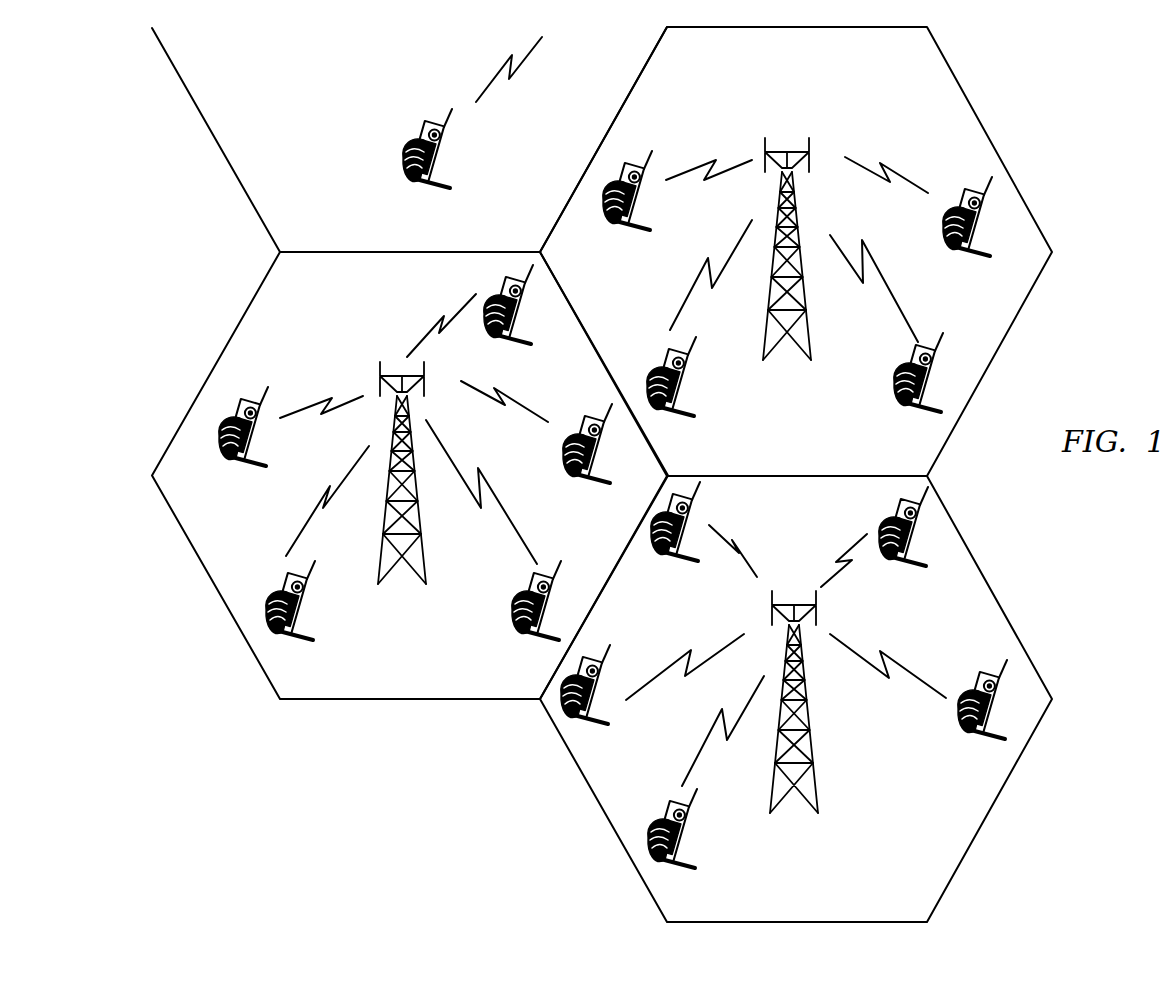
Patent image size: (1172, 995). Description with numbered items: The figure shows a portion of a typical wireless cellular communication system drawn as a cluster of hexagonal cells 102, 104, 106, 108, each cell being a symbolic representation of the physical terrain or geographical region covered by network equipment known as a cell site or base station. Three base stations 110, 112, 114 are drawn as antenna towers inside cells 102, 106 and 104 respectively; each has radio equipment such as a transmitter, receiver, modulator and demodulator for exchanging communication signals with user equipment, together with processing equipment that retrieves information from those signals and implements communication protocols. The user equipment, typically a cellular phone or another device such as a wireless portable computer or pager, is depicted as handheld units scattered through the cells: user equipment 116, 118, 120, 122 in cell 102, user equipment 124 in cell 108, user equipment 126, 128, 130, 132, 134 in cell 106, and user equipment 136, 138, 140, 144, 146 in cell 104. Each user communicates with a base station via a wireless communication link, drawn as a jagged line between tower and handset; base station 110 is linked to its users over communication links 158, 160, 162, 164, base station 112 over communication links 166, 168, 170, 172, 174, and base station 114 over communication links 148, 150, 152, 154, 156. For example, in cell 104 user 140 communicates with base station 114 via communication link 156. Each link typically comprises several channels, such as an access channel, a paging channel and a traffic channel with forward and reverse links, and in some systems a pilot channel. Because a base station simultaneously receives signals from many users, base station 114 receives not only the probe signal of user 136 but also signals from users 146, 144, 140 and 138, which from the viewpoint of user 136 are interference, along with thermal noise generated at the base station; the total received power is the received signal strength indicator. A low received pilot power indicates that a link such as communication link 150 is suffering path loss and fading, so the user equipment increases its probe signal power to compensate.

The cell 102 is at (1003, 162).
The cell 104 is at (1003, 614).
The cell 106 is at (205, 567).
The cell 108 is at (218, 141).
The base station 110 is at (787, 138).
The base station 112 is at (401, 362).
The base station 114 is at (794, 591).
The mobile station 116 is at (974, 260).
The mobile station 118 is at (919, 416).
The mobile station 120 is at (678, 418).
The mobile station 122 is at (632, 233).
The mobile station 124 is at (402, 160).
The mobile station 126 is at (531, 347).
The mobile station 128 is at (590, 486).
The mobile station 130 is at (541, 638).
The mobile station 132 is at (312, 613).
The mobile station 134 is at (256, 469).
The user 136 is at (905, 569).
The user 138 is at (998, 743).
The user equipment 140 is at (694, 838).
The user 144 is at (606, 727).
The user 146 is at (681, 564).
The communication link 148 is at (909, 680).
The communication link 150 is at (852, 543).
The communication link 152 is at (748, 556).
The communication link 154 is at (690, 690).
The communication link 156 is at (731, 742).
The communication link 158 is at (885, 283).
The communication link 160 is at (898, 172).
The communication link 162 is at (713, 163).
The communication link 164 is at (690, 297).
The communication link 166 is at (533, 423).
The communication link 168 is at (445, 314).
The communication link 170 is at (293, 414).
The communication link 172 is at (315, 525).
The communication link 174 is at (500, 512).